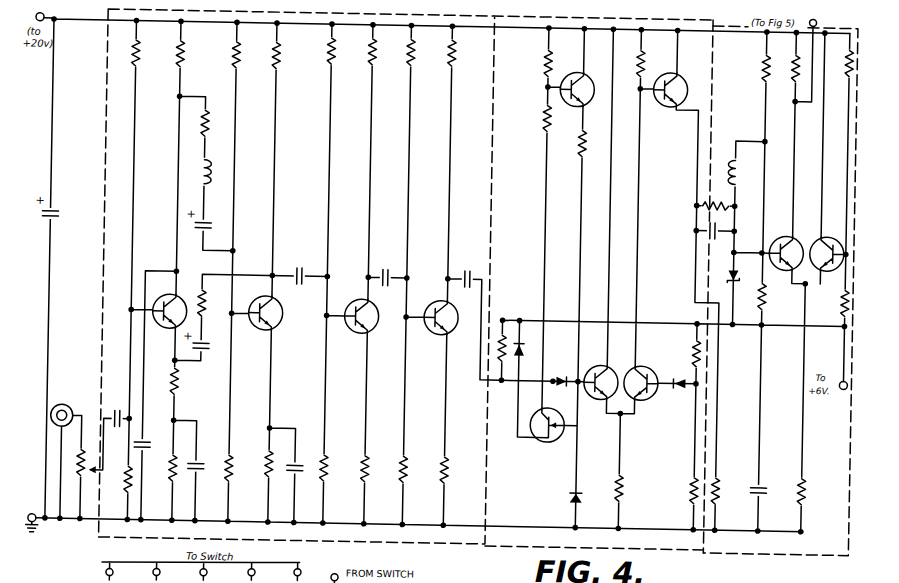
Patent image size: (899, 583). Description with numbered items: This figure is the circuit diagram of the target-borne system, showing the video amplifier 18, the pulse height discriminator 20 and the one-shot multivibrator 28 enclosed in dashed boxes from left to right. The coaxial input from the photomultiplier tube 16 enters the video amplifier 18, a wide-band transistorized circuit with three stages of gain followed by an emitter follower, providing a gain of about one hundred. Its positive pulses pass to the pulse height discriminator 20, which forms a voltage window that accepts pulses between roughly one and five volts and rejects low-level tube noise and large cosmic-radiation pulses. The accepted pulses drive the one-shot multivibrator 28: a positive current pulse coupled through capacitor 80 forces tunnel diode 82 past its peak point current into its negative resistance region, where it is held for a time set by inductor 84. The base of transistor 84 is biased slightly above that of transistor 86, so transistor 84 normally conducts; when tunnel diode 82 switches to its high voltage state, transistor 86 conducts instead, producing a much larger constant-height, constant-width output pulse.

The photomultiplier tube 16 is at (90, 401).
The video amplifier 18 is at (405, 279).
The pulse height discriminator 20 is at (690, 538).
The one-shot multivibrator 28 is at (804, 542).
The capacitor 80 is at (730, 221).
The tunnel diode 82 is at (739, 271).
The inductor 84 is at (737, 160).
The transistor 86 is at (795, 270).